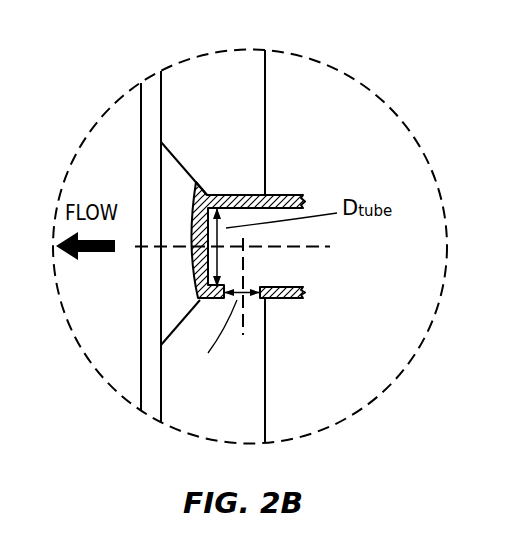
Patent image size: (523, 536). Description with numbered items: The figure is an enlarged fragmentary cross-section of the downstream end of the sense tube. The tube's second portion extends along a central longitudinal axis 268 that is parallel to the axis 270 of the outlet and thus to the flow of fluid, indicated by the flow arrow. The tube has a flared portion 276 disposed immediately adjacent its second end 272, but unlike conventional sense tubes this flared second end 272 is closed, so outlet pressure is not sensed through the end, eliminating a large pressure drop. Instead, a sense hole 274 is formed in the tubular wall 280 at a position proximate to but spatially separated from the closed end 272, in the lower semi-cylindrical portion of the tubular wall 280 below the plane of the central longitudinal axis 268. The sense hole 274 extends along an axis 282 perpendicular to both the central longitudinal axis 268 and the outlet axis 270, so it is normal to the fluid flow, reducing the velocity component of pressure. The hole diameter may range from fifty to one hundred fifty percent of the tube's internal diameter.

The second end 272 is at (140, 187).
The flared portion 276 is at (191, 176).
The tubular wall 280 is at (280, 195).
The axis 282 is at (243, 246).
The central longitudinal axis 268 is at (323, 250).
The axis of the outlet 270 is at (282, 270).
The sense hole 274 is at (253, 300).